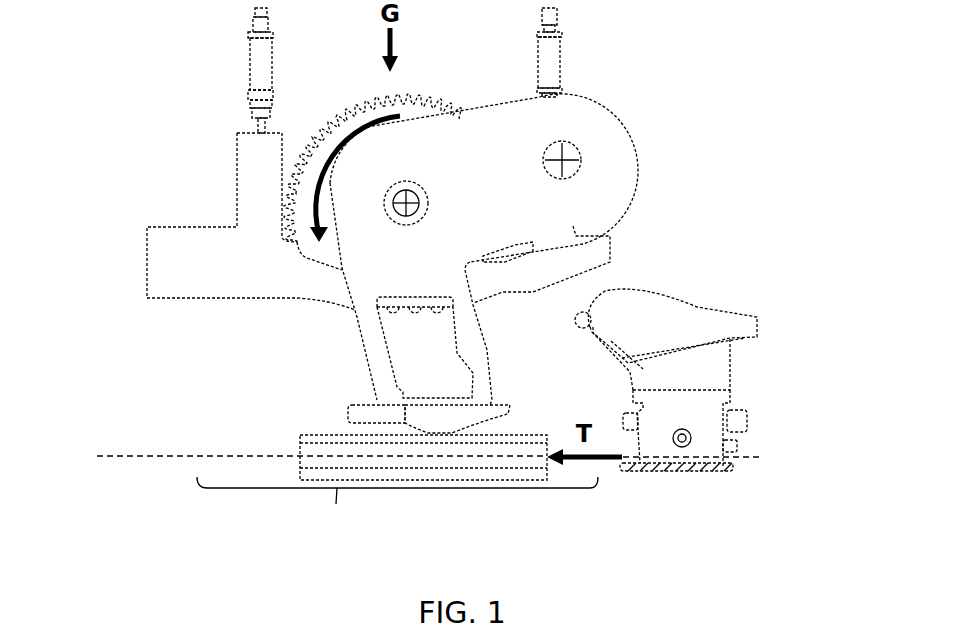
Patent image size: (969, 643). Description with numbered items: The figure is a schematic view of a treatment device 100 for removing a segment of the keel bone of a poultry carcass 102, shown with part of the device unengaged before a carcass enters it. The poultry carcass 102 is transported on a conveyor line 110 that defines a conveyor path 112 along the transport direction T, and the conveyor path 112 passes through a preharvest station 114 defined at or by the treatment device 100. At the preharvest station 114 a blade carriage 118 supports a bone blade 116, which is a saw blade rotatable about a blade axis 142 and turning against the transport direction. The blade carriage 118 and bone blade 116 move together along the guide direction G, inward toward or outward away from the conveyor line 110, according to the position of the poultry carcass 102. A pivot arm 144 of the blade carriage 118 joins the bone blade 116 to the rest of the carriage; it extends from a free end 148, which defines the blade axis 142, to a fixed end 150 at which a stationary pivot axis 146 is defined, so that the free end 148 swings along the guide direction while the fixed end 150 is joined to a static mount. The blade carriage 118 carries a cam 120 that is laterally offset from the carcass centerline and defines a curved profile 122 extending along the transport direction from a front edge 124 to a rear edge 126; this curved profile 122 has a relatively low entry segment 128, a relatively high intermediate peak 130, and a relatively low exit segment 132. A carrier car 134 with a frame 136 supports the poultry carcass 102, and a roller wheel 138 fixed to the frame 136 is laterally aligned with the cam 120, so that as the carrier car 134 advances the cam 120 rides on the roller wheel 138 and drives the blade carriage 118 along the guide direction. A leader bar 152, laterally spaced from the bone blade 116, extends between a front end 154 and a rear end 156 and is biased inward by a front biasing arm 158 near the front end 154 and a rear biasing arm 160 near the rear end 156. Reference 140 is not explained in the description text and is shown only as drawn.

The treatment device 100 is at (738, 85).
The poultry carcass 102 is at (667, 313).
The conveyor line 110 is at (550, 478).
The conveyor path 112 is at (399, 457).
The preharvest station 114 is at (397, 513).
The bone blade 116 is at (330, 122).
The blade carriage 118 is at (488, 352).
The cam 120 is at (428, 420).
The curved profile 122 is at (391, 417).
The front edge 124 is at (519, 404).
The rear edge 126 is at (338, 403).
The entry segment 128 is at (480, 425).
The intermediate peak 130 is at (430, 432).
The exit segment 132 is at (350, 433).
The carrier car 134 is at (767, 319).
The frame 136 is at (710, 365).
The roller wheel 138 is at (697, 440).
The lever arm 140 is at (607, 108).
The blade axis 142 is at (408, 203).
The pivot arm 144 is at (413, 153).
The pivot axis 146 is at (557, 162).
The free end 148 is at (324, 247).
The fixed end 150 is at (640, 148).
The leader bar 152 is at (560, 253).
The front end 154 is at (620, 246).
The rear end 156 is at (137, 293).
The front biasing arm 158 is at (573, 55).
The rear biasing arm 160 is at (238, 68).